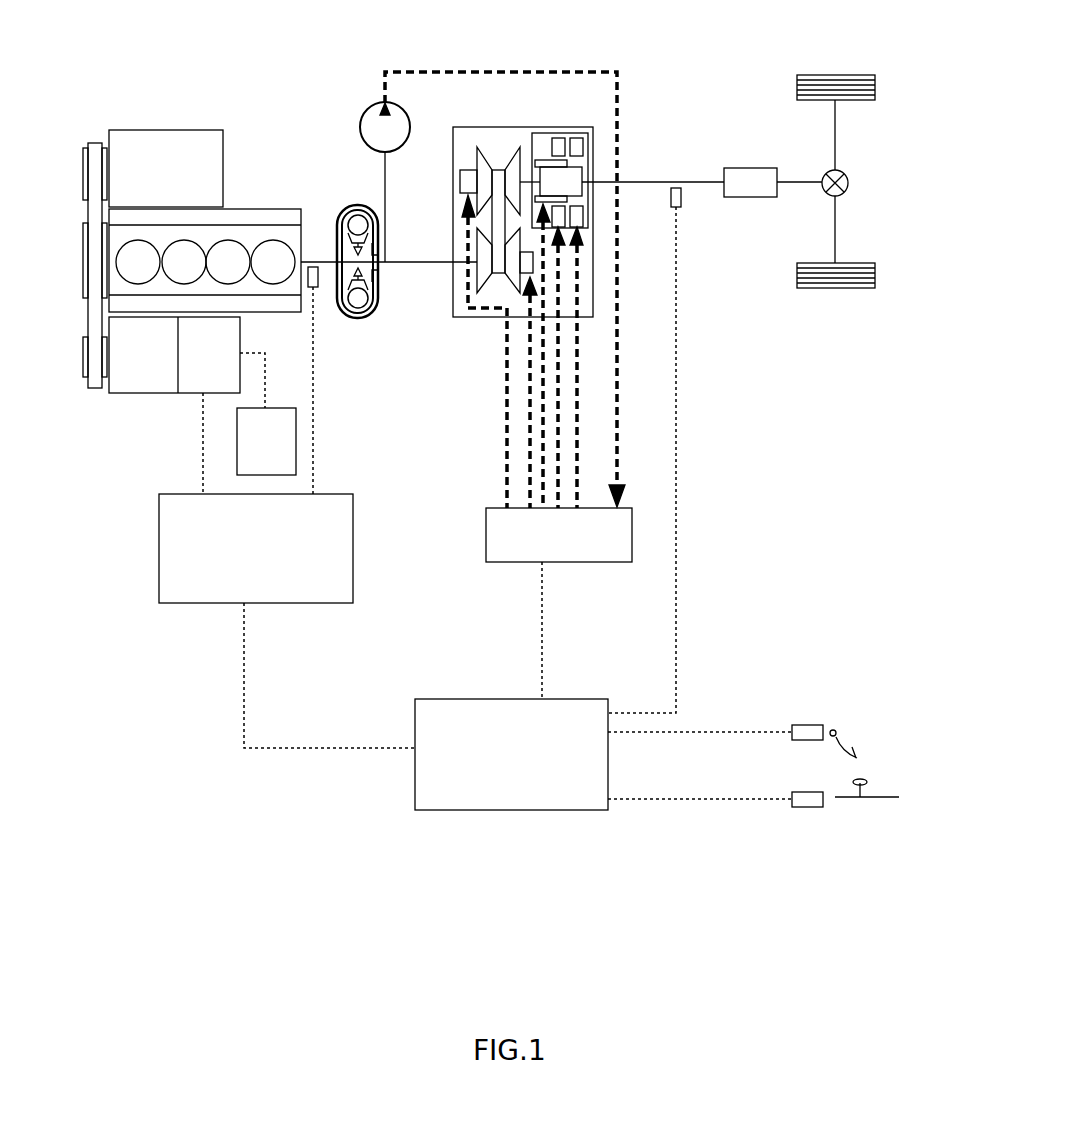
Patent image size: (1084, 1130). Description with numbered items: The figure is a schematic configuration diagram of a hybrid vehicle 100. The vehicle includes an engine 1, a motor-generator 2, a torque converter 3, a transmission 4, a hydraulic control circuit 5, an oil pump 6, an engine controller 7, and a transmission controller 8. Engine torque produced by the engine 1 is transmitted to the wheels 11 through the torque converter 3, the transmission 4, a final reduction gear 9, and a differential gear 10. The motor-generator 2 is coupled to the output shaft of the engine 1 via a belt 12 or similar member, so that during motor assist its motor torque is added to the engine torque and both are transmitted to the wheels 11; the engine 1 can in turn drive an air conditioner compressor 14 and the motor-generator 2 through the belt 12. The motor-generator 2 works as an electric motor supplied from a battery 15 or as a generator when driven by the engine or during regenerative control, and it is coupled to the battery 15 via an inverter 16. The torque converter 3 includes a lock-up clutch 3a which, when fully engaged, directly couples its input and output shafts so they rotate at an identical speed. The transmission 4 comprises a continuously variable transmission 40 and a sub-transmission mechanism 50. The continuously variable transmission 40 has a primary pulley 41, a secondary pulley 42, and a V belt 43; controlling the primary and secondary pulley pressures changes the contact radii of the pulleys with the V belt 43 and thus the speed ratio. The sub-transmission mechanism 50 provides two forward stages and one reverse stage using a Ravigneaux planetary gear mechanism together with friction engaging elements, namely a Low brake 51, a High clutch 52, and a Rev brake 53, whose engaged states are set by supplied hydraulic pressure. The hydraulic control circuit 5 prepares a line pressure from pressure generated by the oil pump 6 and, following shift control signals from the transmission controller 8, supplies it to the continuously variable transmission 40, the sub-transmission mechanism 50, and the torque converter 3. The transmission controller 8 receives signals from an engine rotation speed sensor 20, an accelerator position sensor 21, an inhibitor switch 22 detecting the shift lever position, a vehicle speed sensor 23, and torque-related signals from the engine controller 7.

The hybrid vehicle 100 is at (260, 922).
The engine 1 is at (247, 222).
The motor-generator 2 is at (131, 390).
The torque converter 3 is at (342, 231).
The lock-up clutch 3a is at (342, 252).
The transmission 4 is at (461, 128).
The continuously variable transmission 40 is at (491, 144).
The primary pulley 41 is at (480, 300).
The secondary pulley 42 is at (478, 158).
The V belt 43 is at (500, 175).
The hydraulic control circuit 5 is at (595, 565).
The sub-transmission mechanism 50 is at (597, 294).
The Low brake 51 is at (556, 140).
The High clutch 52 is at (563, 163).
The Rev brake 53 is at (583, 146).
The oil pump 6 is at (360, 132).
The engine controller 7 is at (180, 594).
The transmission controller 8 is at (594, 812).
The final reduction gear 9 is at (733, 168).
The differential gear 10 is at (850, 178).
The wheels 11 is at (856, 75).
The belt 12 is at (93, 385).
The air conditioner compressor 14 is at (171, 136).
The battery 15 is at (276, 415).
The inverter 16 is at (192, 392).
The engine rotation speed sensor 20 is at (318, 290).
The accelerator position sensor 21 is at (800, 725).
The inhibitor switch 22 is at (800, 803).
The vehicle speed sensor 23 is at (675, 207).